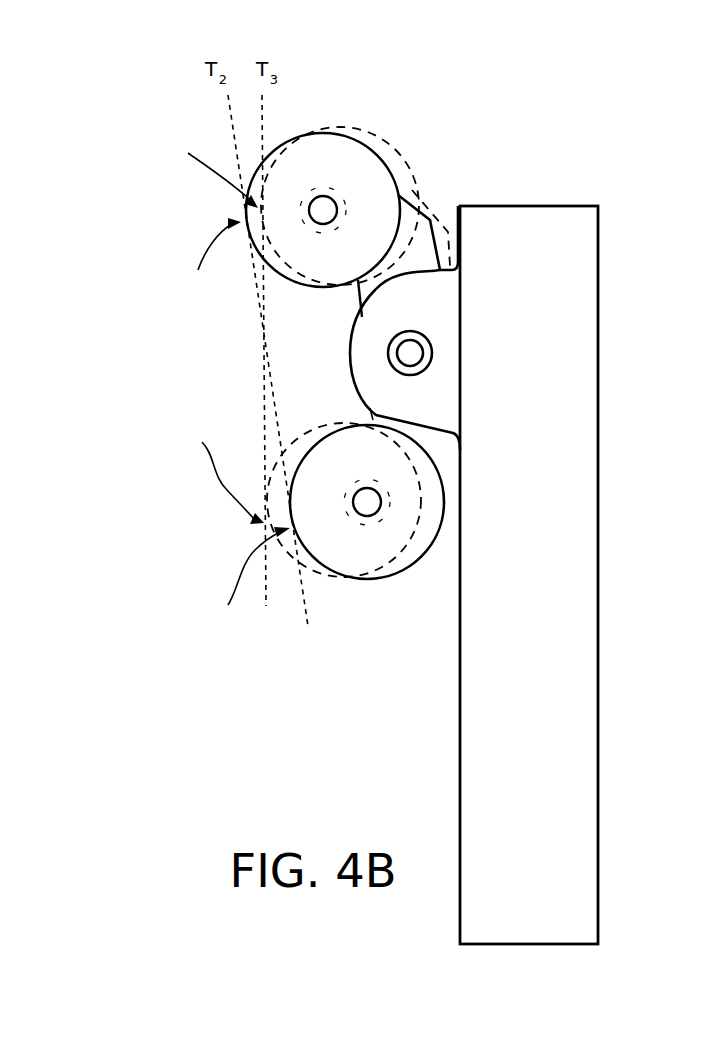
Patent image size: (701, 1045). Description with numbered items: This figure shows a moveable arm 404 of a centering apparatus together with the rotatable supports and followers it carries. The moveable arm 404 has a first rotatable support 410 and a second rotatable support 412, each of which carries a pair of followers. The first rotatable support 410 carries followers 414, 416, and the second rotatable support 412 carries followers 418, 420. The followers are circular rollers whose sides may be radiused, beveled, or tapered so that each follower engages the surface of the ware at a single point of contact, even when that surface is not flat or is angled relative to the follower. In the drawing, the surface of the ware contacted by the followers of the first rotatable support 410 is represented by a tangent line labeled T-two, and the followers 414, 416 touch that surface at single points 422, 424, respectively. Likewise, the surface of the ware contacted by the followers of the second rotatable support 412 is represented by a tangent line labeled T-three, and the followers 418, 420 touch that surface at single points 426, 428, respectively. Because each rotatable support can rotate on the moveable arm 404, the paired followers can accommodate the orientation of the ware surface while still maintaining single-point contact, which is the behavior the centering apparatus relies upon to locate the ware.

The moveable arm 404 is at (540, 243).
The first rotatable support 410 is at (450, 467).
The second rotatable support 412 is at (442, 225).
The follower 414 is at (380, 548).
The follower 416 is at (308, 168).
The follower 418 is at (297, 448).
The follower 420 is at (387, 155).
The single point 422 is at (240, 577).
The single point 424 is at (202, 258).
The single point 426 is at (213, 476).
The single point 428 is at (210, 165).